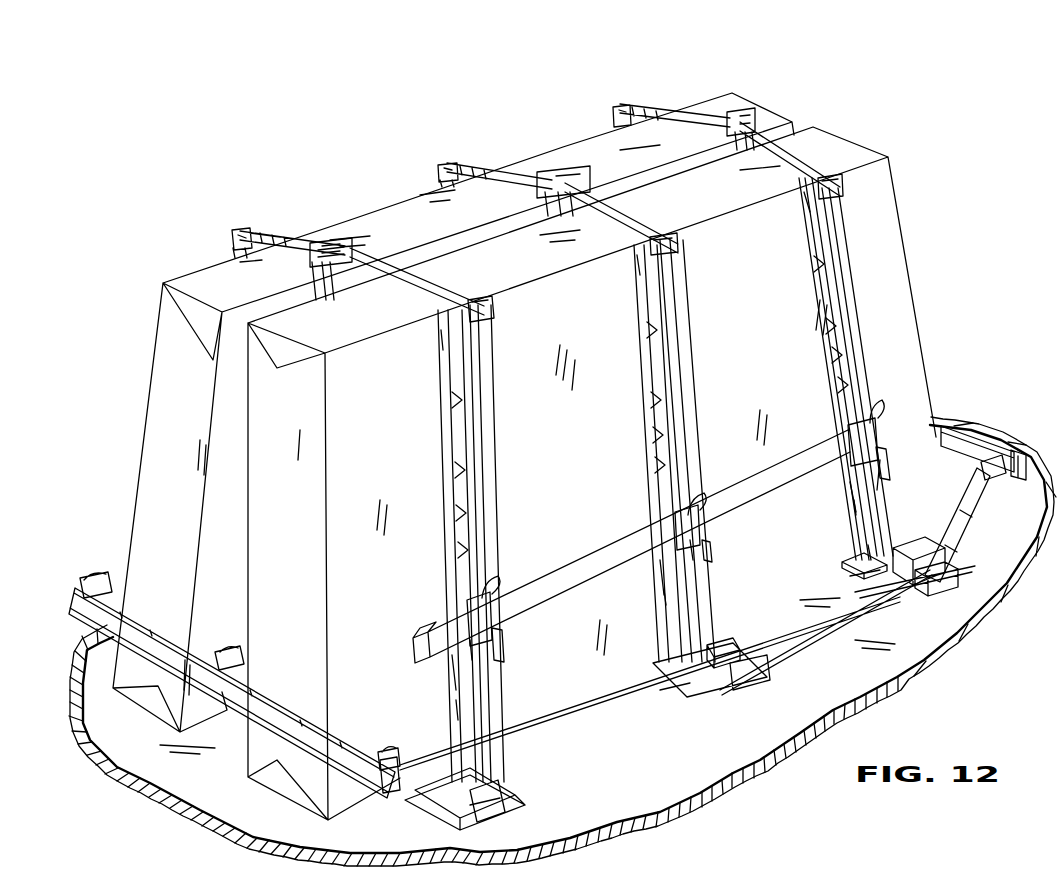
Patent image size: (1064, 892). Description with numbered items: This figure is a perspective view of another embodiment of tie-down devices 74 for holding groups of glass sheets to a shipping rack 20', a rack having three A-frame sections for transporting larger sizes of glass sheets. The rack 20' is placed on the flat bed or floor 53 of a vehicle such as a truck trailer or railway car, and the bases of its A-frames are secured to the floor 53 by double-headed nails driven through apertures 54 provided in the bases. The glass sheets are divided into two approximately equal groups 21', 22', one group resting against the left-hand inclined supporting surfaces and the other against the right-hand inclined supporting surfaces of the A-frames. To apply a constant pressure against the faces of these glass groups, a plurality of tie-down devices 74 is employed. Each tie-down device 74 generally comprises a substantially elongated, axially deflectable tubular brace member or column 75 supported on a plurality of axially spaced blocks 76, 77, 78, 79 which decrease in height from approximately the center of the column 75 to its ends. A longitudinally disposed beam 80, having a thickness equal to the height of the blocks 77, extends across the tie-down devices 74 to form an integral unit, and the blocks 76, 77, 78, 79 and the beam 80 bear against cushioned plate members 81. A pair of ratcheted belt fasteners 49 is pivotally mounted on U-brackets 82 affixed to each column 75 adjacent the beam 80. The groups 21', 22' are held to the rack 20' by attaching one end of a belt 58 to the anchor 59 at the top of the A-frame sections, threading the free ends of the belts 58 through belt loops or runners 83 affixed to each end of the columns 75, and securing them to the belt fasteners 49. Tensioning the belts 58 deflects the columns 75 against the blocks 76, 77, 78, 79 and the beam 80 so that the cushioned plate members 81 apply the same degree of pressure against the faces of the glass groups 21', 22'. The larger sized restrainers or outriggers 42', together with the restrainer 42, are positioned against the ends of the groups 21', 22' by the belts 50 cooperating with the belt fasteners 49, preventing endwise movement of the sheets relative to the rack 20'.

The rack 20' is at (831, 661).
The group of glass sheets 21' is at (604, 473).
The group of glass sheets 22' is at (482, 398).
The restrainer 42 is at (999, 439).
The restrainer 42' is at (234, 693).
The belt fastener 49 is at (385, 752).
The belt 50 is at (583, 708).
The floor 53 is at (700, 752).
The aperture 54 is at (911, 590).
The belt 58 is at (286, 235).
The anchor 59 is at (345, 238).
The tie-down device 74 is at (496, 448).
The column 75 is at (460, 514).
The block 76 is at (462, 551).
The block 77 is at (450, 470).
The block 78 is at (448, 400).
The block 79 is at (443, 342).
The beam 80 is at (578, 560).
The cushioned plate member 81 is at (455, 660).
The U-bracket 82 is at (476, 626).
The belt loop 83 is at (240, 235).